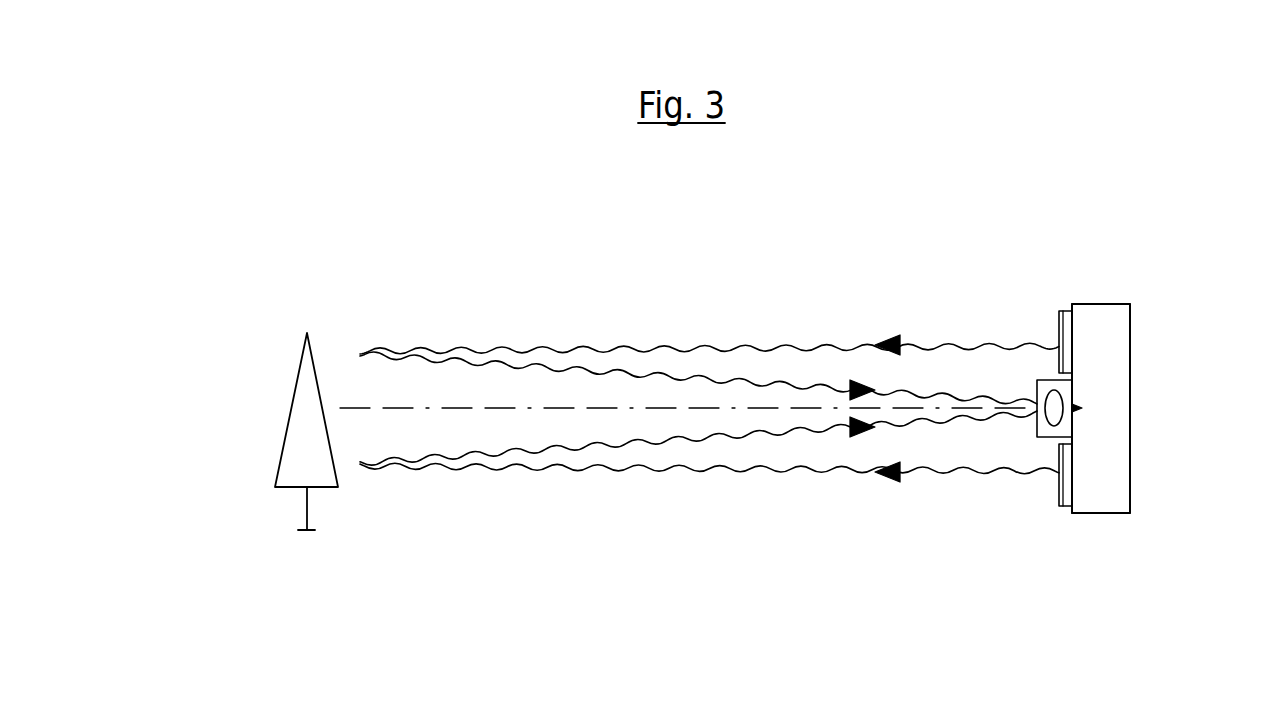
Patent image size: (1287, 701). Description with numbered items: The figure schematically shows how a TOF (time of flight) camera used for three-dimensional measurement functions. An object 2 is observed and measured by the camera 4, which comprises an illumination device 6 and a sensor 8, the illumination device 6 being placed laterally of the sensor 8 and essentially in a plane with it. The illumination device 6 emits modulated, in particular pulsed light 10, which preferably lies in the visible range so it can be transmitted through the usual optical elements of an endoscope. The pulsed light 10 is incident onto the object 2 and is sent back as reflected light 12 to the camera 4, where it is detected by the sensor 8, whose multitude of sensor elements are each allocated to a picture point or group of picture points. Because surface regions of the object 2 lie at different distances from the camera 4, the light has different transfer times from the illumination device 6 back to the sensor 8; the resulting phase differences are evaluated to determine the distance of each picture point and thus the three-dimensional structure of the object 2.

The object 2 is at (297, 408).
The camera 4 is at (1103, 293).
The illumination device 6 is at (1057, 320).
The sensor 8 is at (1113, 442).
The pulsed light 10 is at (777, 472).
The reflected light 12 is at (688, 440).